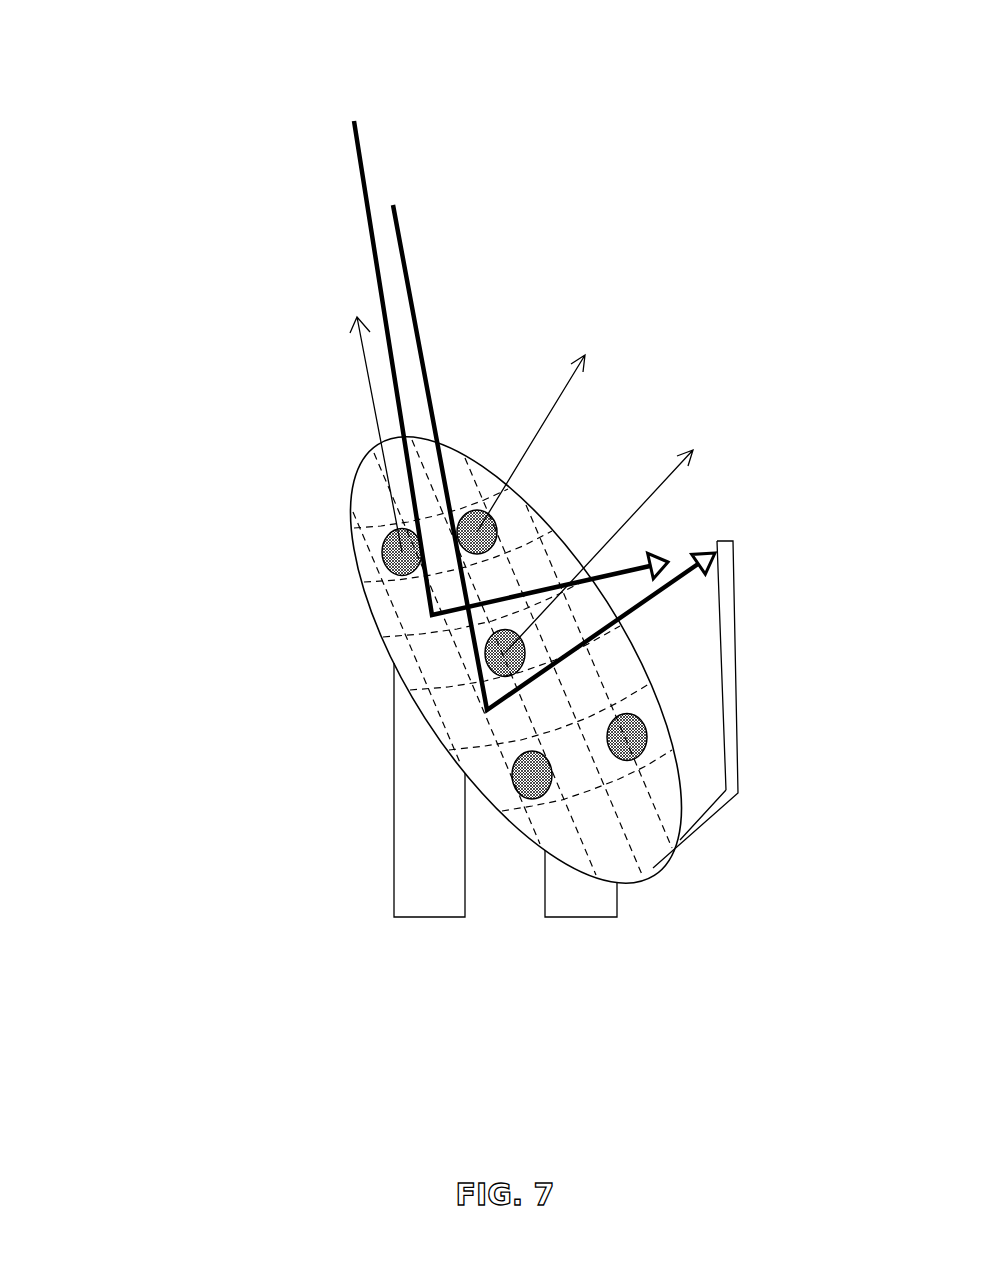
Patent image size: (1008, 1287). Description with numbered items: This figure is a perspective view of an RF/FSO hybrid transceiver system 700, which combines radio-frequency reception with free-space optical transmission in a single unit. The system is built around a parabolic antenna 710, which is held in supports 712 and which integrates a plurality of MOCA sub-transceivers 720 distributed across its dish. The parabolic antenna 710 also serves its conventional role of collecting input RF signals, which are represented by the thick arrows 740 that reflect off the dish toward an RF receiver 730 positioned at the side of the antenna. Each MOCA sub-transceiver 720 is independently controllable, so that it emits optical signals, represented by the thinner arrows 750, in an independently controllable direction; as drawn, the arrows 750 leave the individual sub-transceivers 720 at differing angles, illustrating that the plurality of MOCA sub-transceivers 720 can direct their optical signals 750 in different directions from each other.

The RF/FSO hybrid transceiver system 700 is at (167, 168).
The parabolic antenna 710 is at (357, 557).
The supports 712 is at (394, 755).
The MOCA sub-transceivers 720 is at (385, 547).
The RF receiver 730 is at (735, 541).
The thick arrows 740 is at (366, 185).
The arrows 750 is at (370, 386).